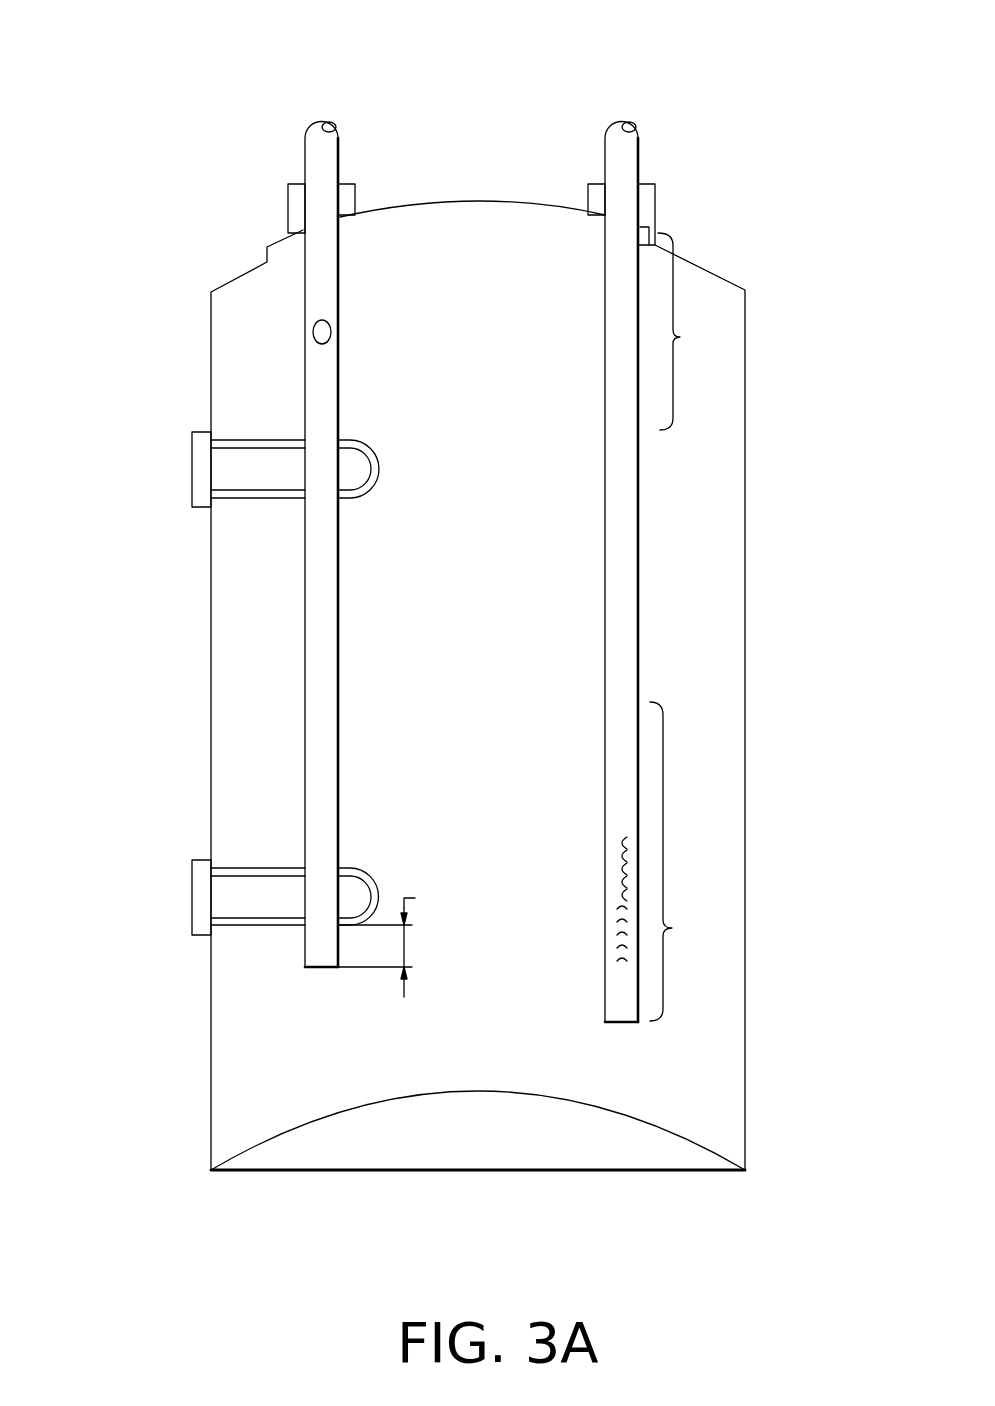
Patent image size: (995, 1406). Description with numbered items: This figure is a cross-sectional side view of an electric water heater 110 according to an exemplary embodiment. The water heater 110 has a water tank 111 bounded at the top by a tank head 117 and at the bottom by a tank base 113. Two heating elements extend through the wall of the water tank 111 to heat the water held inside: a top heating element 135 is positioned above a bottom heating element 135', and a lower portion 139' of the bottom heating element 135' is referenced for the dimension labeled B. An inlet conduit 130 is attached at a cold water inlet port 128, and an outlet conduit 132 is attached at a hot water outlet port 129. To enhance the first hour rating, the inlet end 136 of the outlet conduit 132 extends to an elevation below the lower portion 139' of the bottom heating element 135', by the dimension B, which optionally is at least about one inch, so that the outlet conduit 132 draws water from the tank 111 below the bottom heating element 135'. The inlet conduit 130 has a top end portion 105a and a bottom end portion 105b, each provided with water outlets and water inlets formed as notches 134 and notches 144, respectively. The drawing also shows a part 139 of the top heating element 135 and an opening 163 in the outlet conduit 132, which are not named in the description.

The electric water heater 110 is at (153, 107).
The water tank 111 is at (211, 398).
The tank base 113 is at (430, 1170).
The tank head 117 is at (478, 200).
The cold water inlet port 128 is at (655, 207).
The hot water outlet port 129 is at (358, 197).
The inlet conduit 130 is at (640, 528).
The outlet conduit 132 is at (303, 285).
The notches 134 is at (622, 347).
The top heating element 135 is at (303, 419).
The bottom heating element 135' is at (253, 843).
The inlet end 136 is at (320, 967).
The first pin 139 is at (234, 519).
The lower portion 139' is at (239, 946).
The notches 144 is at (626, 369).
The hole 163 is at (311, 330).
The top end portion 105a is at (705, 331).
The bottom end portion 105b is at (696, 861).